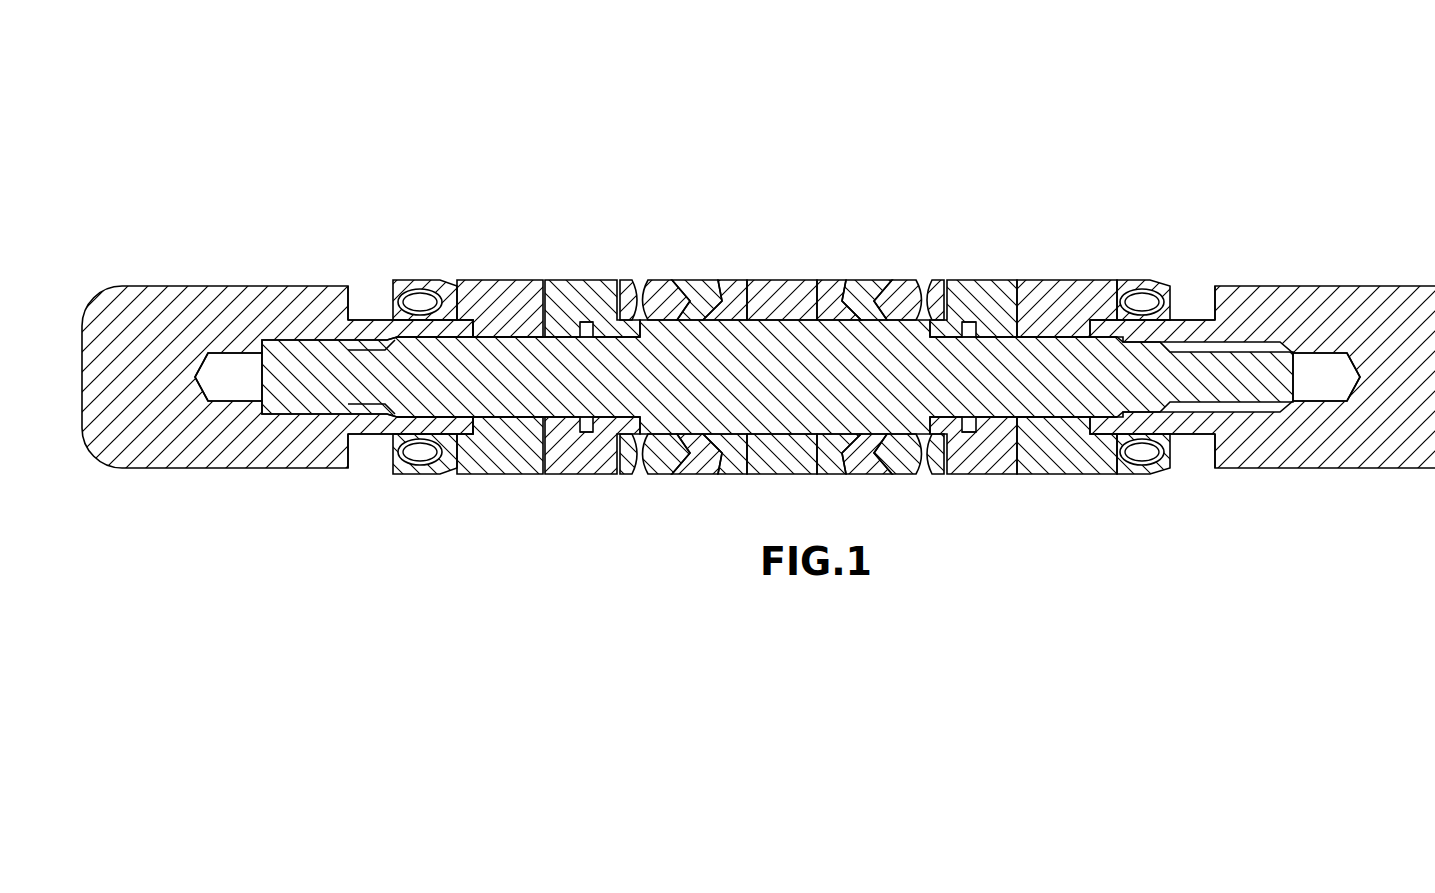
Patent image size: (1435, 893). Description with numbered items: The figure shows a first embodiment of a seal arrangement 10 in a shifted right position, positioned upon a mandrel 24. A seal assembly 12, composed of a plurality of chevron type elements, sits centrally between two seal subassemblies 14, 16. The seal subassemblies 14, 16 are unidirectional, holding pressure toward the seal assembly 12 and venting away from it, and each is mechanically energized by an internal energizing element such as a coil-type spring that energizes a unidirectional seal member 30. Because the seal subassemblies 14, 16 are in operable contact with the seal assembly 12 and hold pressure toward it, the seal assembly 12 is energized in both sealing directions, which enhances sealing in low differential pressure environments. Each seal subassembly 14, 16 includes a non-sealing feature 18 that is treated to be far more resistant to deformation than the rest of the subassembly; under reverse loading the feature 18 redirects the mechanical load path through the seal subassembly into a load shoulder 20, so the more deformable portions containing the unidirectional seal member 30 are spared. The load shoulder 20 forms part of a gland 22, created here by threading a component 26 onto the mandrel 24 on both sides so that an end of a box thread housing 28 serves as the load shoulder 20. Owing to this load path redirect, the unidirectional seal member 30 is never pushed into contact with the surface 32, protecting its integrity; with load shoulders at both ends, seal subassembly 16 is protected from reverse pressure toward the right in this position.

The seal arrangement 10 is at (972, 145).
The seal assembly 12 is at (730, 285).
The seal subassembly 14 is at (462, 300).
The seal subassembly 16 is at (1087, 298).
The non-sealing feature 18 is at (457, 340).
The load shoulder 20 is at (480, 428).
The gland 22 is at (1047, 337).
The mandrel 24 is at (777, 343).
The component 26 is at (232, 300).
The box thread housing 28 is at (372, 425).
The unidirectional seal member 30 is at (408, 282).
The surface 32 is at (352, 300).